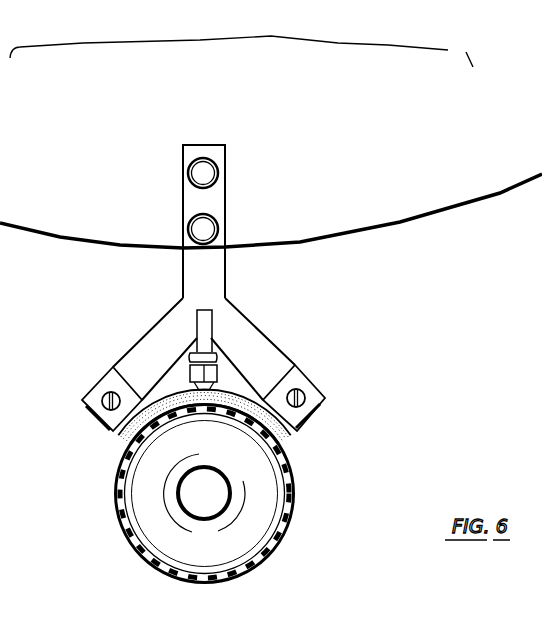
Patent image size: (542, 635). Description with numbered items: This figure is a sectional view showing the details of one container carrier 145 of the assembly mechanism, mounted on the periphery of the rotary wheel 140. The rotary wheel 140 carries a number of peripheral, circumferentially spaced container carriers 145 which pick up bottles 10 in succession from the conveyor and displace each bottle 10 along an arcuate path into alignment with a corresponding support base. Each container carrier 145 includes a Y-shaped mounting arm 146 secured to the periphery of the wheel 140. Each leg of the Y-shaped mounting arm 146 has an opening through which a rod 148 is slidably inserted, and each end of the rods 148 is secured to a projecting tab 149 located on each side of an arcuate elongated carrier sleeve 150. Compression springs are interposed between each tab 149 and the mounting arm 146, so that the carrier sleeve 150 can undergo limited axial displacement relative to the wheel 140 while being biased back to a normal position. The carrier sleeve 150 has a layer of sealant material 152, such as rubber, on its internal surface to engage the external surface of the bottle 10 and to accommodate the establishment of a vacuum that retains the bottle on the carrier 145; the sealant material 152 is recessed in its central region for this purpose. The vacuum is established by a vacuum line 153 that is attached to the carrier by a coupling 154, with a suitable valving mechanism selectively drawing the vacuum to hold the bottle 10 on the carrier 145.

The bottle 10 is at (284, 532).
The rotary wheel 140 is at (368, 146).
The container carrier 145 is at (296, 344).
The Y-shaped mounting arm 146 is at (190, 204).
The rod 148 is at (82, 412).
The projecting tab 149 is at (83, 393).
The carrier sleeve 150 is at (293, 444).
The rim 152 is at (291, 457).
The vacuum line 153 is at (205, 328).
The coupling 154 is at (211, 372).